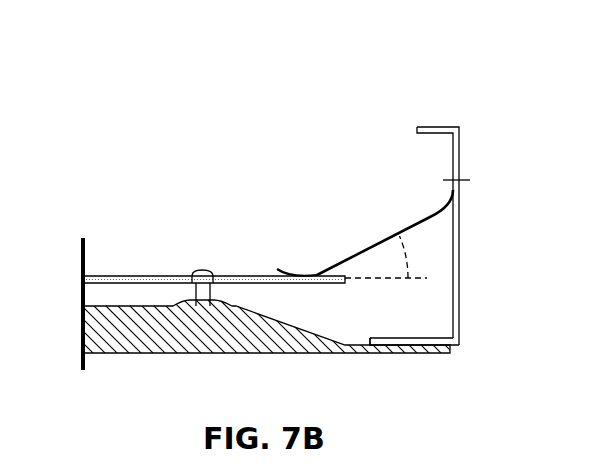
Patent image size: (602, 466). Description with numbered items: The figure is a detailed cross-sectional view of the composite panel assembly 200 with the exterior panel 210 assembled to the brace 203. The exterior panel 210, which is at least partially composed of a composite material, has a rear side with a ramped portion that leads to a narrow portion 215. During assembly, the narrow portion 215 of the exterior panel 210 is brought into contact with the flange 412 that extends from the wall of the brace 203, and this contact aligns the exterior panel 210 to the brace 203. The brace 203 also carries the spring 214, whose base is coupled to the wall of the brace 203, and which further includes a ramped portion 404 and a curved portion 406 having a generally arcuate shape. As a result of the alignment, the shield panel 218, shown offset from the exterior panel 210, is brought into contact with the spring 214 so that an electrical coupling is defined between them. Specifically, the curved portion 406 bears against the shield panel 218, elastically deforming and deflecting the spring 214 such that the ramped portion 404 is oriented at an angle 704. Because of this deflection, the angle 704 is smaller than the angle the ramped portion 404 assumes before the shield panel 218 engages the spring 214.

The composite panel assembly 200 is at (428, 86).
The brace 203 is at (461, 211).
The exterior panel 210 is at (132, 332).
The spring 214 is at (415, 222).
The narrow portion 215 is at (420, 344).
The shield panel 218 is at (128, 275).
The ramped portion 404 is at (360, 248).
The curved portion 406 is at (315, 271).
The flange 412 is at (418, 337).
The angle 704 is at (407, 250).